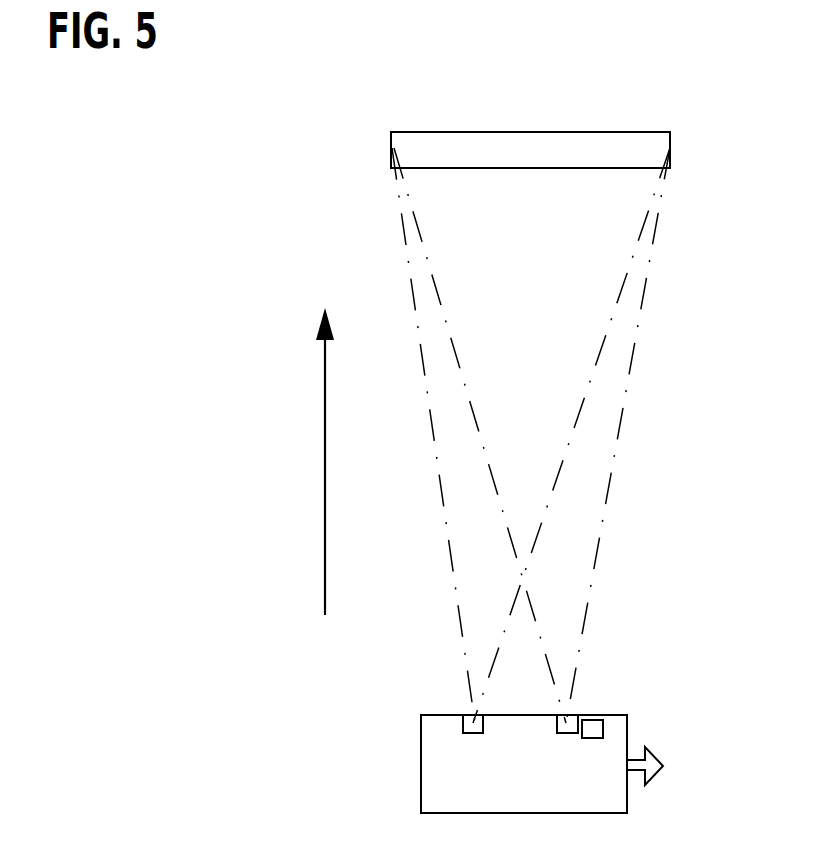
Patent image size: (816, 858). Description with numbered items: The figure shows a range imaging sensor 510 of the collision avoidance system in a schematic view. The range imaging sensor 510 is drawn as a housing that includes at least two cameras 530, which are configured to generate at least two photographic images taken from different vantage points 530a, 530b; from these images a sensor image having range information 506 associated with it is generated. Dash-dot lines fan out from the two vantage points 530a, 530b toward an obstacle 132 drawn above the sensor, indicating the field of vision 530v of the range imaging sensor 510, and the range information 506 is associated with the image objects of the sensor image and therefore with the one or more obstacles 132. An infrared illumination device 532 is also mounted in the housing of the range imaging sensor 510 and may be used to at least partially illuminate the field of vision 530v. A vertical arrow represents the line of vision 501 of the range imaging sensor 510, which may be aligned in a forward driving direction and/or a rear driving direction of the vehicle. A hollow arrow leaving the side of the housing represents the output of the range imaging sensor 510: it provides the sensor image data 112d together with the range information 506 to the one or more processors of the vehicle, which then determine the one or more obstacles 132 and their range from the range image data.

The obstacle 132 is at (543, 126).
The field of vision 530v is at (543, 318).
The line of vision 501 is at (320, 484).
The range imaging sensor 510 is at (436, 707).
The first vantage point 530a is at (478, 685).
The second vantage point 530b is at (567, 685).
The infrared illumination device 532 is at (594, 719).
The cameras 530 is at (558, 731).
The sensor image data 112d is at (720, 761).
The range information 506 is at (713, 796).